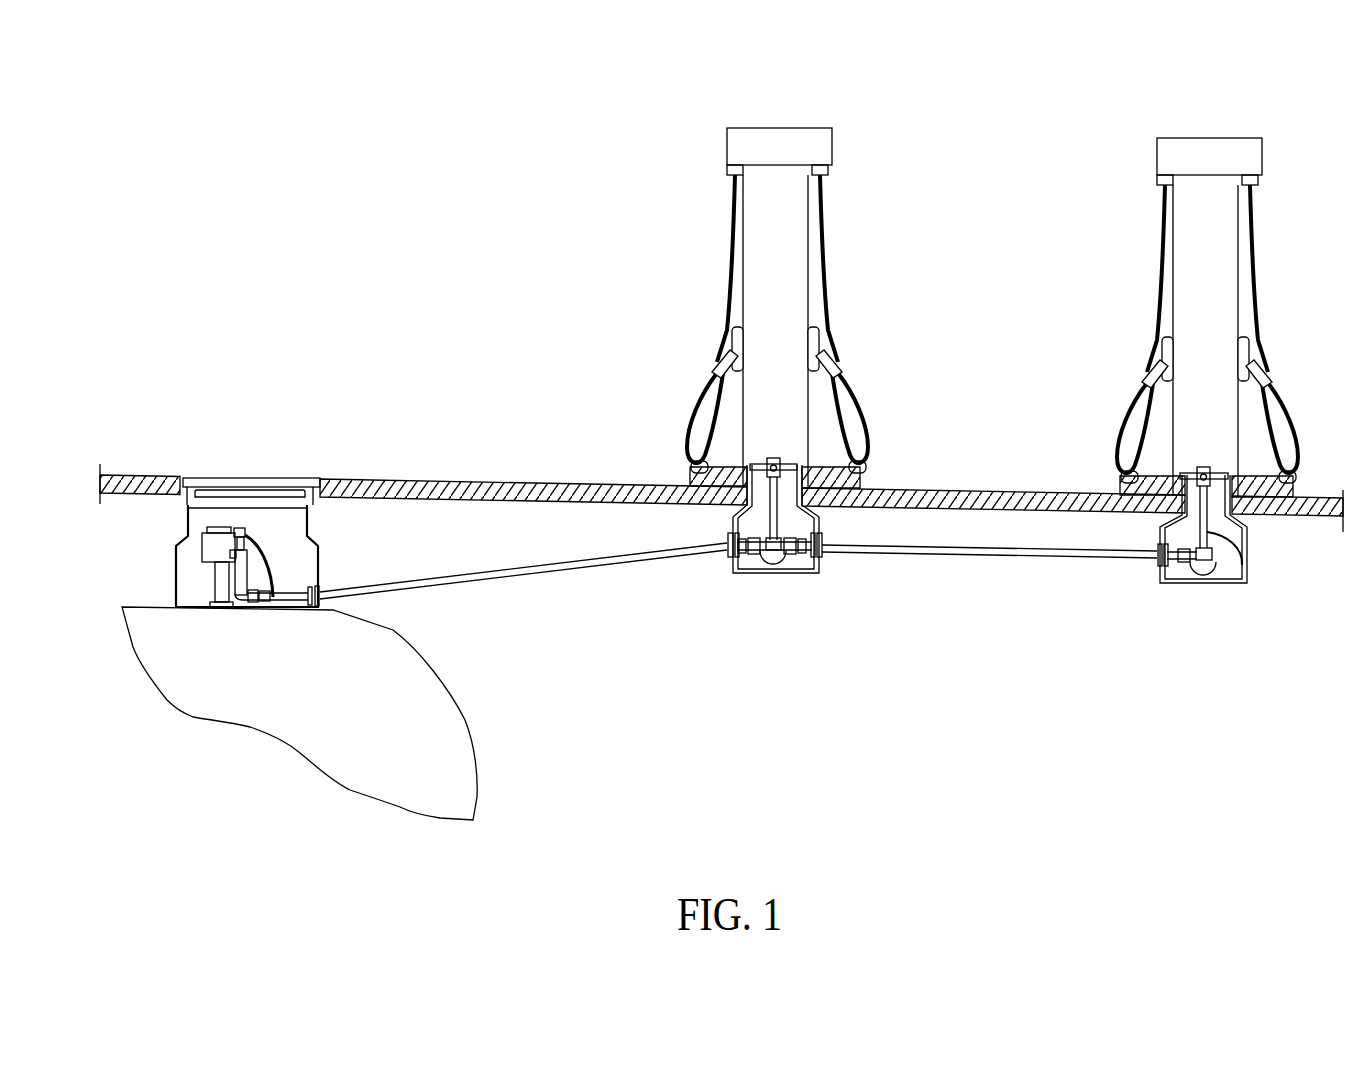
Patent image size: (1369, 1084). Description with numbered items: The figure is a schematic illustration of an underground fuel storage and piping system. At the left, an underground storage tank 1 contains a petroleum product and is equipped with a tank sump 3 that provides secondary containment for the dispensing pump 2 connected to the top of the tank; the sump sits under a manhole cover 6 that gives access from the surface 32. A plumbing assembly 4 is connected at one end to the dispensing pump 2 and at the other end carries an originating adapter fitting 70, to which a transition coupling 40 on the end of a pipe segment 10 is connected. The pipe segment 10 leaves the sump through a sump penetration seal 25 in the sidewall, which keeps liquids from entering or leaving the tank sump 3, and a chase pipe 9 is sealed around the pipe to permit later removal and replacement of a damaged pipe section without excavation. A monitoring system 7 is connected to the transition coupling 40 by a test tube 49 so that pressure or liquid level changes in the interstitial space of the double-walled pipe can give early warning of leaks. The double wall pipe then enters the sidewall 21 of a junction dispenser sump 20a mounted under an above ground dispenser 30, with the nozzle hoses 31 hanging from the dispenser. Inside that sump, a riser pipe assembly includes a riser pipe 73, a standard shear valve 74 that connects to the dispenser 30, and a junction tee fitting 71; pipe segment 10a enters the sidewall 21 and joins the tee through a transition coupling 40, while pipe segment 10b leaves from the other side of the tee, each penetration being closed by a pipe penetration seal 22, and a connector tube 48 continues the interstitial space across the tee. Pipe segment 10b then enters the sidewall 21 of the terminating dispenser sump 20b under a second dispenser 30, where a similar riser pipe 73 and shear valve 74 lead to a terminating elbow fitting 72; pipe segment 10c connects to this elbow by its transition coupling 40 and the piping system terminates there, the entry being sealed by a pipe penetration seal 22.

The underground storage tank 1 is at (393, 630).
The dispensing pump 2 is at (683, 540).
The tank sump 3 is at (318, 547).
The plumbing assembly 4 is at (235, 580).
The manhole cover 6 is at (248, 478).
The monitoring system 7 is at (243, 535).
The chase pipe 9 is at (440, 582).
The pipe segment 10 is at (300, 603).
The pipe segment 10a is at (740, 561).
The pipe segment 10b is at (812, 565).
The pipe segment 10c is at (1160, 572).
The junction dispenser sump 20a is at (956, 488).
The terminating dispenser sump 20b is at (1170, 517).
The sidewall 21 is at (752, 492).
The pipe penetration seal 22 is at (730, 540).
The sump penetration seal 25 is at (322, 590).
The above ground dispenser 30 is at (808, 322).
The dispenser hose nozzle 31 is at (848, 460).
The surface 32 is at (482, 478).
The transition coupling 40 is at (280, 602).
The connector tube 48 is at (776, 566).
The test tube 49 is at (257, 545).
The originating adapter fitting 70 is at (248, 605).
The junction tee fitting 71 is at (787, 544).
The terminating elbow fitting 72 is at (1238, 556).
The riser pipe 73 is at (805, 506).
The shear valve 74 is at (777, 458).